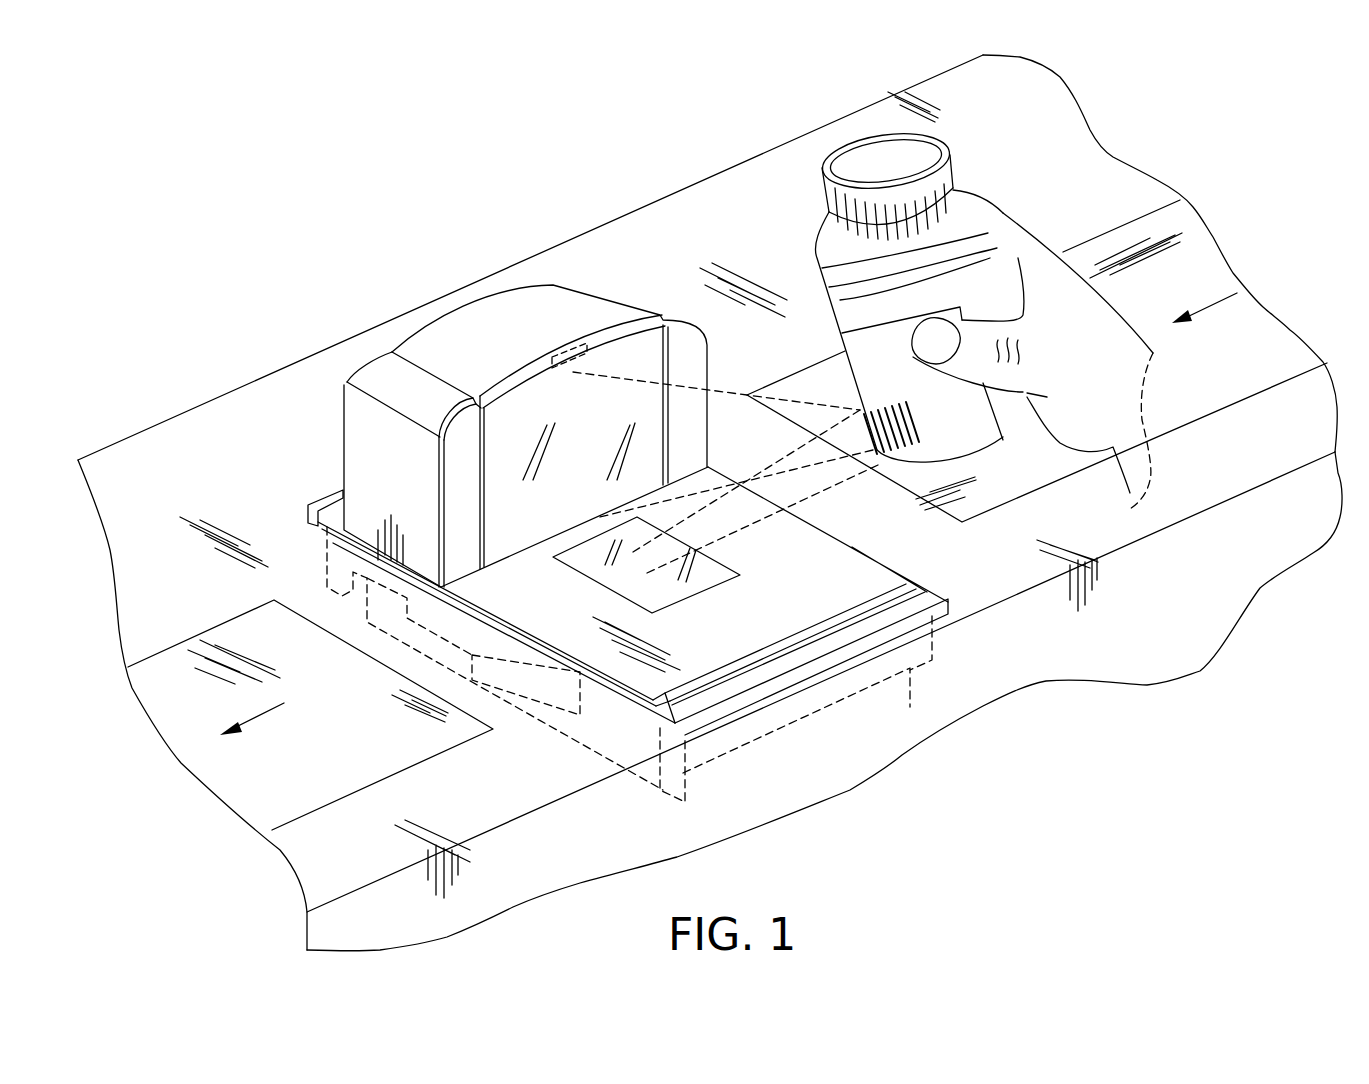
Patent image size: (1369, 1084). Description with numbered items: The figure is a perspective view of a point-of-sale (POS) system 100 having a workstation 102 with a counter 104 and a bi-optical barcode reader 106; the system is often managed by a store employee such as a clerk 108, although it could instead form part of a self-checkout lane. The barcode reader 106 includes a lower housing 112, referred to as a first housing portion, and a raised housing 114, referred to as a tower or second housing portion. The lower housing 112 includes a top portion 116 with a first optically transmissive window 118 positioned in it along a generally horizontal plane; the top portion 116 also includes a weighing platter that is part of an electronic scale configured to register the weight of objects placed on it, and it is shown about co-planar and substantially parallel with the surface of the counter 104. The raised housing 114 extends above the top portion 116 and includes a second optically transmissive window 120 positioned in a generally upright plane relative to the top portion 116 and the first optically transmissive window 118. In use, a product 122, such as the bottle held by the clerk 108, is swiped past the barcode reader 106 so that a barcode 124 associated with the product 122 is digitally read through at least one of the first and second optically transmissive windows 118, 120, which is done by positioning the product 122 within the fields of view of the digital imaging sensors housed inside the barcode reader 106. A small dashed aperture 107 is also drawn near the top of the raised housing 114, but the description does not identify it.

The point-of-sale (POS) system 100 is at (142, 178).
The workstation 102 is at (669, 167).
The counter 104 is at (1043, 92).
The bi-optical barcode reader 106 is at (355, 477).
The top-down camera window 107 is at (569, 352).
The clerk 108 is at (1113, 384).
The lower housing 112 is at (628, 608).
The raised housing 114 is at (489, 426).
The top portion 116 is at (643, 677).
The first optically transmissive window 118 is at (700, 580).
The second optically transmissive window 120 is at (527, 413).
The product 122 is at (951, 294).
The barcode 124 is at (905, 427).